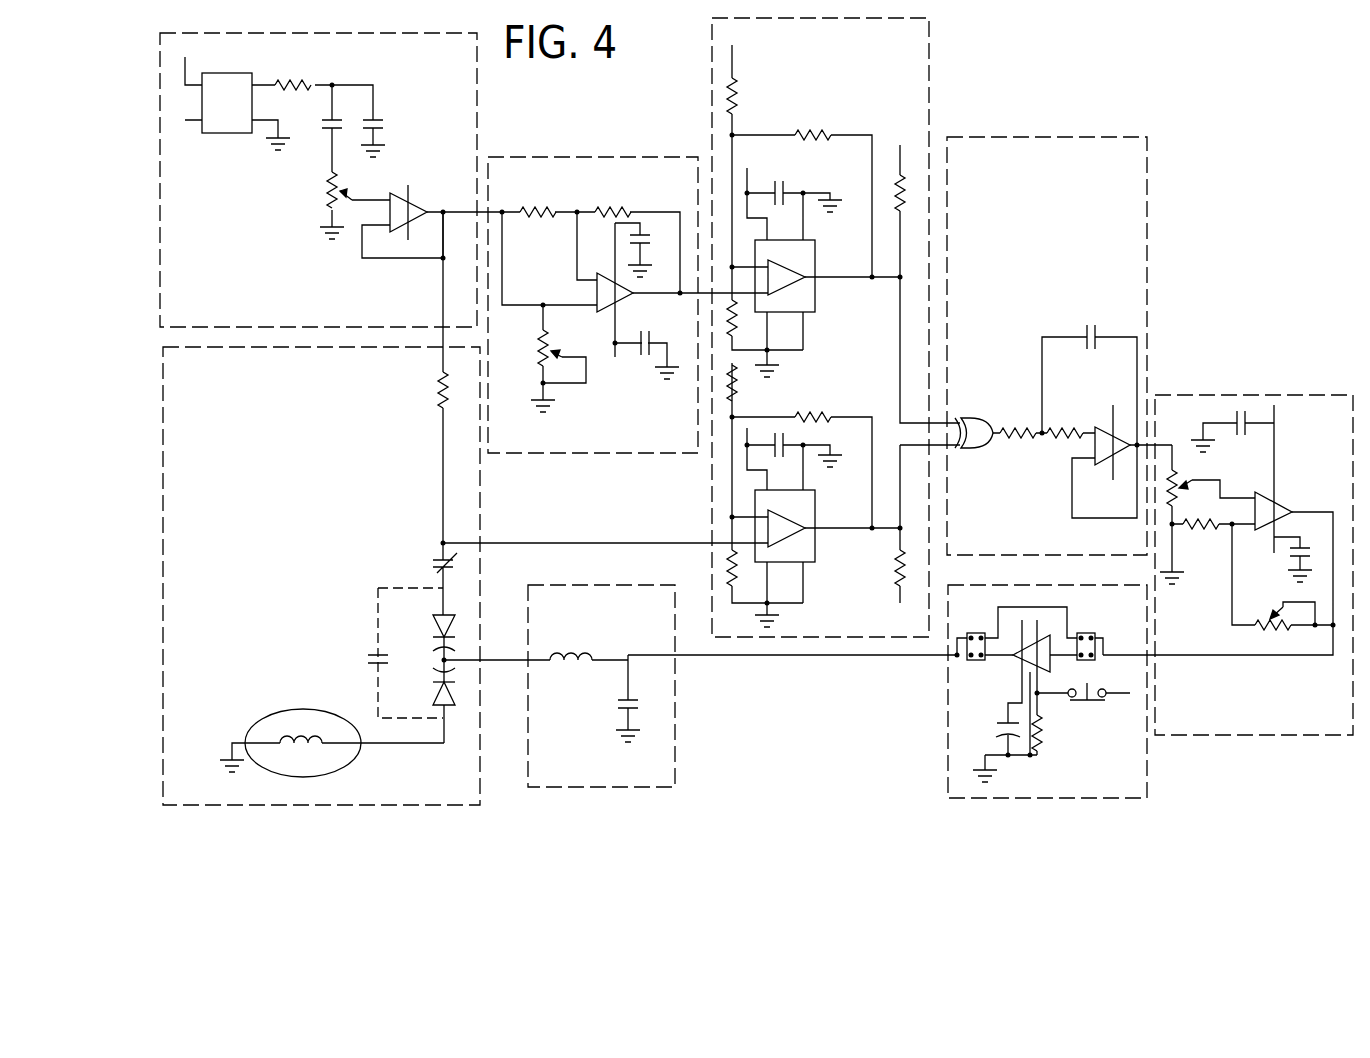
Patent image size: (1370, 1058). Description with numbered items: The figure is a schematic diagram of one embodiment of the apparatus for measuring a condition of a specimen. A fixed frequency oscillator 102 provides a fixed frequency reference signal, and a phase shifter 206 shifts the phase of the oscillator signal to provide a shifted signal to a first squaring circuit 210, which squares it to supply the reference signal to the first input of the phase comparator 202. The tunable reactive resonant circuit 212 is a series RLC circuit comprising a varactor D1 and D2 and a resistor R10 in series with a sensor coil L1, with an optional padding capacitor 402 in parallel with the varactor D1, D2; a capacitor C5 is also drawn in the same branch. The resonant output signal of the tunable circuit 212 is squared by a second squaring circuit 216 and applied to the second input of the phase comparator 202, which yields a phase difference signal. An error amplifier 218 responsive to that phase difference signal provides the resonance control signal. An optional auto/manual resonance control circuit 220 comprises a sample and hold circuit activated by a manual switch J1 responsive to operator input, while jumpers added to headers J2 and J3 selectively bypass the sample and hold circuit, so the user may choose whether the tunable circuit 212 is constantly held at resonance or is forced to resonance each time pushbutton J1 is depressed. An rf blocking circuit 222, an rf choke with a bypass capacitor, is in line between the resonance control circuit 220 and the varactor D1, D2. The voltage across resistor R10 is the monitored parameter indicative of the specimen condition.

The fixed frequency oscillator 102 is at (480, 103).
The phase shifter 206 is at (588, 155).
The first squaring circuit 210 is at (897, 327).
The second squaring circuit 216 is at (930, 100).
The phase comparator 202 is at (1050, 135).
The error amplifier 218 is at (1255, 395).
The auto/manual resonance control circuit 220 is at (940, 691).
The rf blocking circuit 222 is at (675, 733).
The tunable reactive resonant circuit 212 is at (465, 508).
The padding capacitor 402 is at (369, 657).
The resistor R10 is at (420, 386).
The capacitor C5 is at (428, 582).
The varactor D1 is at (427, 644).
The varactor D2 is at (427, 708).
The sensor coil L1 is at (332, 744).
The manual switch J1 is at (1083, 709).
The header J2 is at (1089, 630).
The header J3 is at (974, 630).